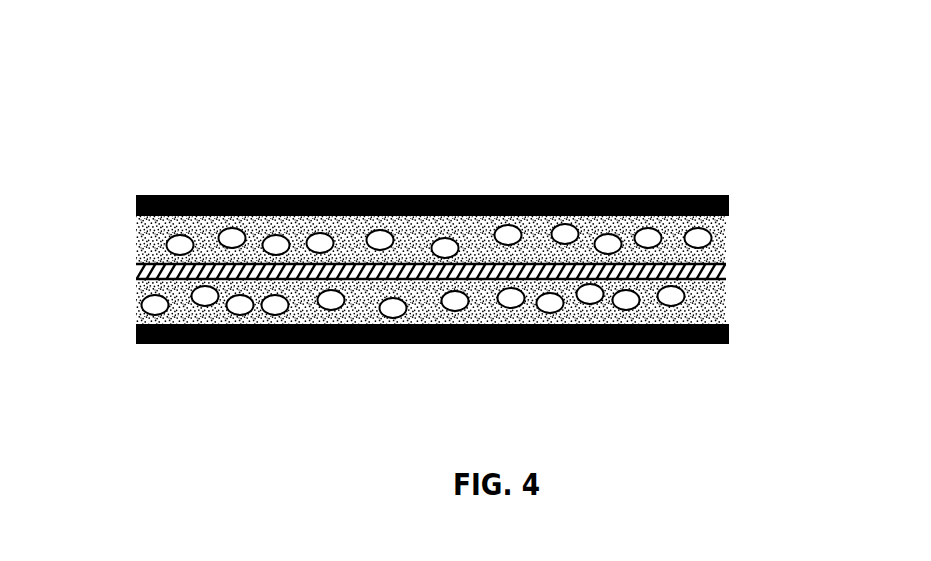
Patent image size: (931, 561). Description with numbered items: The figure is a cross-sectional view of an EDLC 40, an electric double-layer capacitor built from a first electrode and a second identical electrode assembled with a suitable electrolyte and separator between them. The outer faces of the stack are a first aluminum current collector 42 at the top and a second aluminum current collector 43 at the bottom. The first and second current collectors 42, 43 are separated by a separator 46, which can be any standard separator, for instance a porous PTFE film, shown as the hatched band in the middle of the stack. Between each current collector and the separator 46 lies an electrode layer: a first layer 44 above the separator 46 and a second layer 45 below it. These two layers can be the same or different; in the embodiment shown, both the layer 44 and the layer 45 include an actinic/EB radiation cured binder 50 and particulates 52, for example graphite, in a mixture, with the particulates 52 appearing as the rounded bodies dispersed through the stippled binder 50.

The EDLC 40 is at (414, 251).
The first aluminum current collector 42 is at (185, 187).
The second aluminum current collector 43 is at (215, 337).
The first layer 44 is at (435, 211).
The second layer 45 is at (414, 294).
The separator 46 is at (130, 262).
The actinic/EB radiation cured binder 50 is at (712, 242).
The particulates 52 is at (676, 296).